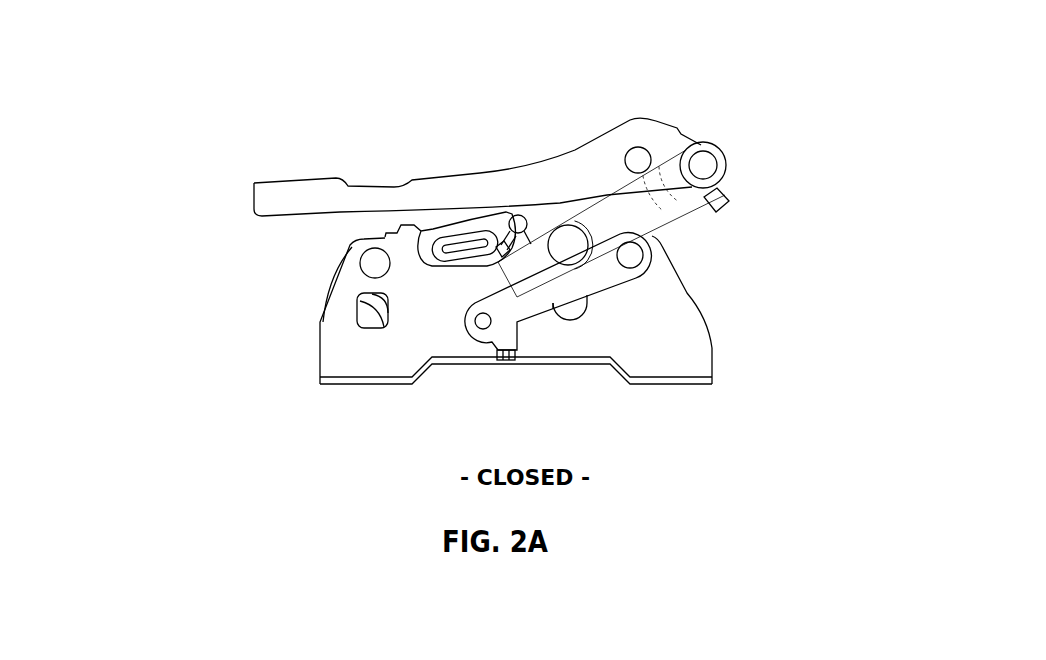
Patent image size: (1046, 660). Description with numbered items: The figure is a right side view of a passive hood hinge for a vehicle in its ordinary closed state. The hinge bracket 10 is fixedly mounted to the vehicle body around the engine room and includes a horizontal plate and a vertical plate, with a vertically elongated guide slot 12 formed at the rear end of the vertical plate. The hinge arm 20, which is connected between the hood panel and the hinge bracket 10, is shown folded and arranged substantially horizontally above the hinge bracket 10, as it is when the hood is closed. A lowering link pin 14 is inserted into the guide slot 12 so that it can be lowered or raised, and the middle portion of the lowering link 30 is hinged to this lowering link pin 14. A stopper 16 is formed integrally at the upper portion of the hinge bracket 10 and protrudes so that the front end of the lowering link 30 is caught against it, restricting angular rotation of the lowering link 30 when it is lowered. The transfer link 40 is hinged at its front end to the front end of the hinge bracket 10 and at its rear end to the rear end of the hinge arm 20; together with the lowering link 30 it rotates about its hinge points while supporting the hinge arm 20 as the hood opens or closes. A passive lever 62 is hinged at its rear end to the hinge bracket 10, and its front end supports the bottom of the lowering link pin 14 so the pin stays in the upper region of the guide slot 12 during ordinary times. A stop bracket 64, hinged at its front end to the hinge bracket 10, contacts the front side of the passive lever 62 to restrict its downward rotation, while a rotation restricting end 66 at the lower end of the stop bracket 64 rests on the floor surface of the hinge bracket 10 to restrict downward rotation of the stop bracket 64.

The hinge bracket 10 is at (372, 392).
The guide slot 12 is at (580, 313).
The lowering link pin 14 is at (566, 240).
The stopper 16 is at (511, 222).
The hinge arm 20 is at (493, 168).
The lowering link 30 is at (606, 186).
The transfer link 40 is at (438, 220).
The passive lever 62 is at (626, 290).
The stop bracket 64 is at (527, 313).
The rotation restricting end 66 is at (507, 362).